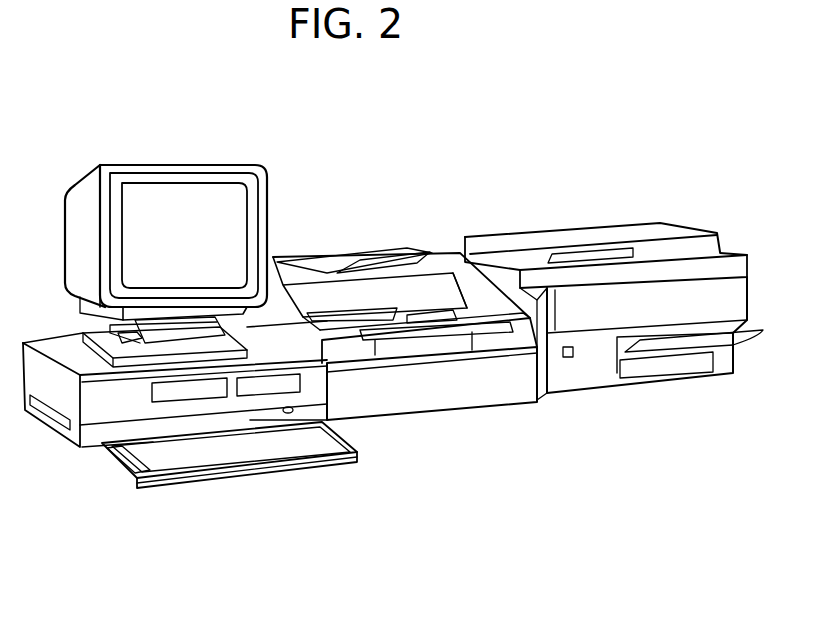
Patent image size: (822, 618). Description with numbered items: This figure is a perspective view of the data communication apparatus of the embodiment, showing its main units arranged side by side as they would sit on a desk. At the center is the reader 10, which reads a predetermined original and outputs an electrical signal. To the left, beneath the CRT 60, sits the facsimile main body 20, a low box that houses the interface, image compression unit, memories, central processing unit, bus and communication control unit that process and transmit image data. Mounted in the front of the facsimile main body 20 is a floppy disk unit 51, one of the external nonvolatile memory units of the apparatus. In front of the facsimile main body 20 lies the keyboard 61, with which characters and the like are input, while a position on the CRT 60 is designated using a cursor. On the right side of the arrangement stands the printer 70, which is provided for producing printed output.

The reader 10 is at (374, 250).
The facsimile main body 20 is at (48, 430).
The floppy disk unit 51 is at (278, 382).
The CRT 60 is at (221, 163).
The keyboard 61 is at (250, 477).
The printer 70 is at (617, 223).